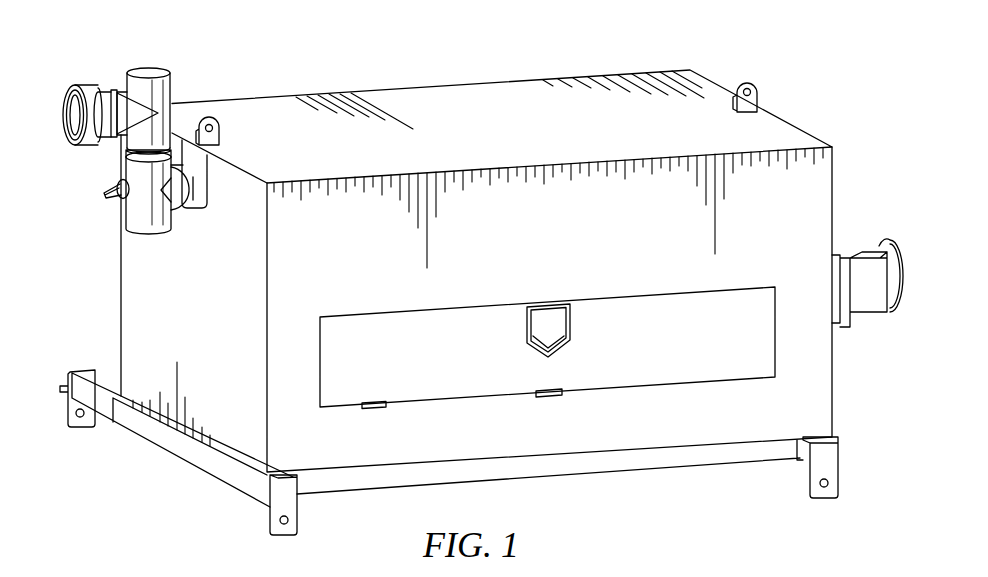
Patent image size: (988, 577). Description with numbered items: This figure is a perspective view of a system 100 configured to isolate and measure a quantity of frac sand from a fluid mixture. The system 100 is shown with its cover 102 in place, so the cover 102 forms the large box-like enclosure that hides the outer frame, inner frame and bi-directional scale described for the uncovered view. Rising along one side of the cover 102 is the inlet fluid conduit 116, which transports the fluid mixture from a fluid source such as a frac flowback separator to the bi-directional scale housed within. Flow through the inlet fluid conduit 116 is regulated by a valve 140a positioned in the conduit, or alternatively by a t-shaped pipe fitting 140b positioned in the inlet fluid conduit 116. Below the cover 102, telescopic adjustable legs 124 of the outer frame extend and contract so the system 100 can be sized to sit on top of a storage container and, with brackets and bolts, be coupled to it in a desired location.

The system 100 is at (464, 272).
The cover 102 is at (138, 258).
The inlet fluid conduit 116 is at (78, 84).
The telescopic adjustable legs 124 is at (92, 377).
The valve 140a is at (81, 216).
The t-shaped pipe fitting 140b is at (138, 197).